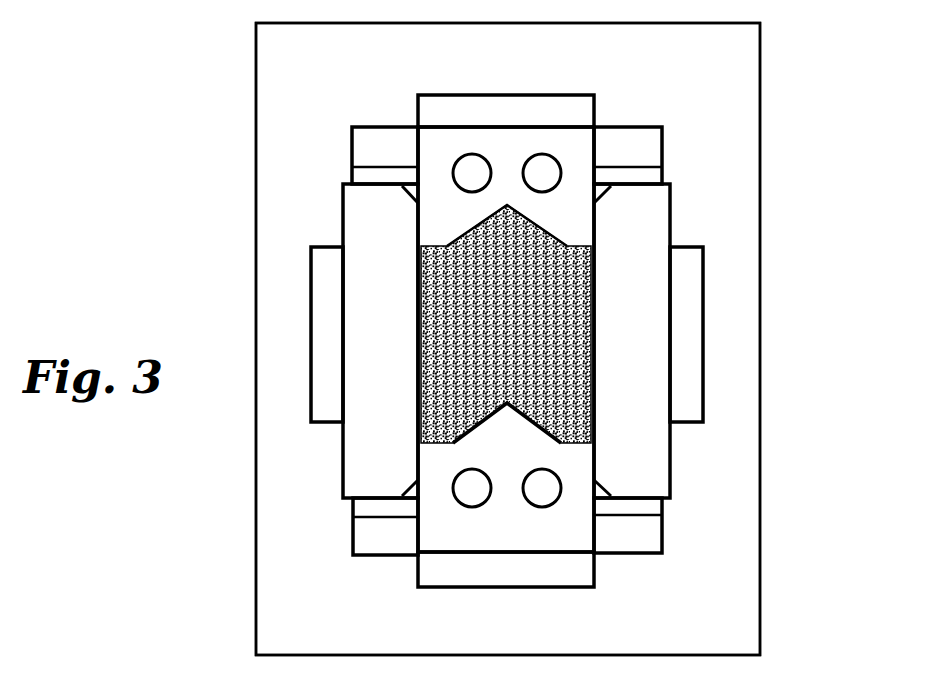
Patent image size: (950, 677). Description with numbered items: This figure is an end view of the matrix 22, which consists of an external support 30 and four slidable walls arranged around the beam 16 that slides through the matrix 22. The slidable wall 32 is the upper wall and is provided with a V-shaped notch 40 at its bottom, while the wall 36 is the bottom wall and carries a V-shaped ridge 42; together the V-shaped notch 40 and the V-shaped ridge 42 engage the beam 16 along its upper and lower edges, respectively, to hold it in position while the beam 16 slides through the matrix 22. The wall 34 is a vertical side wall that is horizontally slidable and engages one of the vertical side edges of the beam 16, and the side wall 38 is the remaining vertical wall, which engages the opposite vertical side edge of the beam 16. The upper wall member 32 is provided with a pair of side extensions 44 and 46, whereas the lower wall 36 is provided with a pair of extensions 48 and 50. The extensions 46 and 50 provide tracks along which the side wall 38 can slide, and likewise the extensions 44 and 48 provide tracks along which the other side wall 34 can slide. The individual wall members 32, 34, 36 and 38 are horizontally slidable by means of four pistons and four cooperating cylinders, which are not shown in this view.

The beam 16 is at (585, 320).
The matrix 22 is at (762, 40).
The external support 30 is at (735, 138).
The upper slidable wall 32 is at (508, 95).
The vertical side wall 34 is at (635, 218).
The bottom wall 36 is at (540, 521).
The side wall 38 is at (378, 423).
The V-shaped notch 40 is at (533, 224).
The V-shaped ridge 42 is at (483, 422).
The side extension 44 is at (628, 150).
The side extension 46 is at (375, 145).
The extension 48 is at (632, 531).
The extension 50 is at (378, 535).